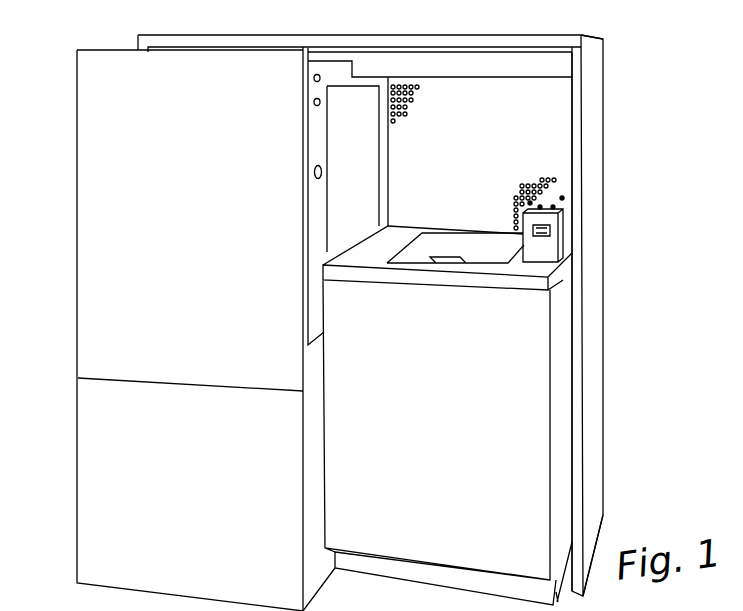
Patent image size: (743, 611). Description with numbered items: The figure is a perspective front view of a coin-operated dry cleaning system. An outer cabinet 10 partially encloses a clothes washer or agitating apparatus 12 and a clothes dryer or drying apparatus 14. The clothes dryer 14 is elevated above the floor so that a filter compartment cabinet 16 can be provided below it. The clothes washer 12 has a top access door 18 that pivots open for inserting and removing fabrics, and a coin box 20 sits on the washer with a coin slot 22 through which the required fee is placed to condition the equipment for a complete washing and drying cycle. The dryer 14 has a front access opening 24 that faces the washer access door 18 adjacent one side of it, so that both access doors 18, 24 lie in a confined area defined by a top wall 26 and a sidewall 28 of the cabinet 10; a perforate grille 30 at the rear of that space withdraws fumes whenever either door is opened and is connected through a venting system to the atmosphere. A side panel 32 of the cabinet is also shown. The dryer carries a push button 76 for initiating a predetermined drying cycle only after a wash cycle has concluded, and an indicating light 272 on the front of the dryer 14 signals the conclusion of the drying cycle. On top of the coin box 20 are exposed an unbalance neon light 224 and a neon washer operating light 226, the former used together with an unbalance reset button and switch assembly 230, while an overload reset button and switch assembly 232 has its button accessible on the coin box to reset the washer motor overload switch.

The outer cabinet 10 is at (603, 42).
The clothes washer 12 is at (556, 336).
The clothes dryer 14 is at (310, 218).
The filter compartment cabinet 16 is at (90, 418).
The top access door 18 is at (487, 257).
The coin box 20 is at (563, 229).
The coin slot 22 is at (545, 238).
The front access opening 24 is at (340, 137).
The top wall 26 is at (472, 36).
The sidewall 28 is at (572, 112).
The perforate grille 30 is at (556, 100).
The side panel 32 is at (556, 402).
The push button 76 is at (314, 76).
The unbalance neon light 224 is at (552, 187).
The neon washer operating light 226 is at (562, 198).
The unbalance reset button and switch assembly 230 is at (540, 207).
The overload reset button and switch assembly 232 is at (553, 207).
The indicating light 272 is at (314, 101).